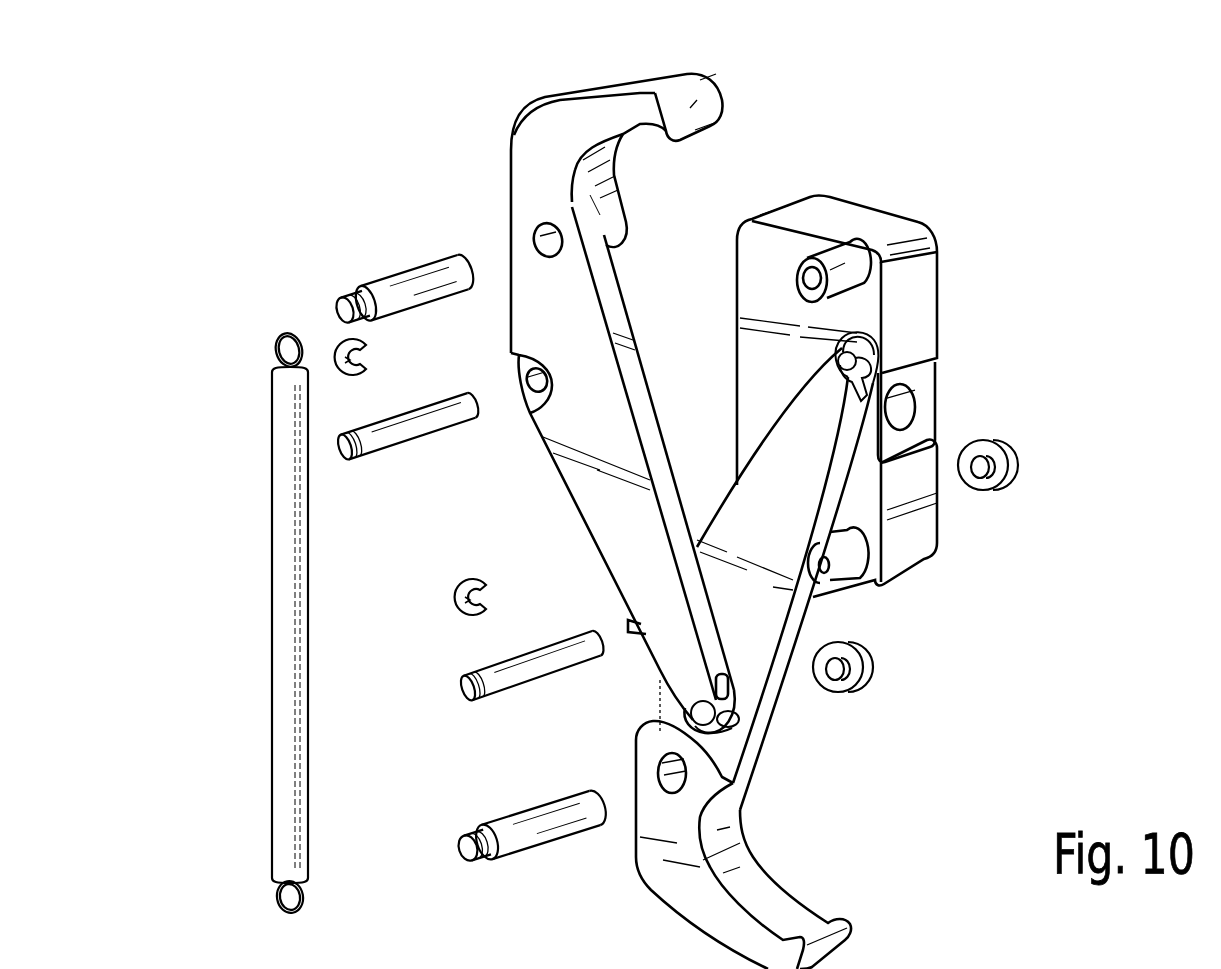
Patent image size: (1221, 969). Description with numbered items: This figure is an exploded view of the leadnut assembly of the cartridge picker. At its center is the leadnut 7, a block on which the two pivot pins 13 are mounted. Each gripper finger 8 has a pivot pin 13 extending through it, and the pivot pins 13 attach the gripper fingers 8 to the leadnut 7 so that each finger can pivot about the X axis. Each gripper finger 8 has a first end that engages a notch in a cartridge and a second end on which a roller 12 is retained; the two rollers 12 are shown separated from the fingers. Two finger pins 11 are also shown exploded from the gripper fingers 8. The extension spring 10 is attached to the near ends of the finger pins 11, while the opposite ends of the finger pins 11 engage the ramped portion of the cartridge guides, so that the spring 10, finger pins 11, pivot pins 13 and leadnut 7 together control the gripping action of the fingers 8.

The leadnut 7 is at (857, 223).
The gripper finger 8 is at (697, 107).
The extension spring 10 is at (290, 777).
The finger pin 11 is at (333, 310).
The roller 12 is at (983, 490).
The pivot pin 13 is at (393, 440).